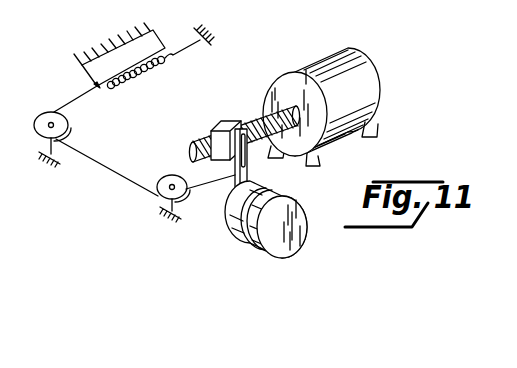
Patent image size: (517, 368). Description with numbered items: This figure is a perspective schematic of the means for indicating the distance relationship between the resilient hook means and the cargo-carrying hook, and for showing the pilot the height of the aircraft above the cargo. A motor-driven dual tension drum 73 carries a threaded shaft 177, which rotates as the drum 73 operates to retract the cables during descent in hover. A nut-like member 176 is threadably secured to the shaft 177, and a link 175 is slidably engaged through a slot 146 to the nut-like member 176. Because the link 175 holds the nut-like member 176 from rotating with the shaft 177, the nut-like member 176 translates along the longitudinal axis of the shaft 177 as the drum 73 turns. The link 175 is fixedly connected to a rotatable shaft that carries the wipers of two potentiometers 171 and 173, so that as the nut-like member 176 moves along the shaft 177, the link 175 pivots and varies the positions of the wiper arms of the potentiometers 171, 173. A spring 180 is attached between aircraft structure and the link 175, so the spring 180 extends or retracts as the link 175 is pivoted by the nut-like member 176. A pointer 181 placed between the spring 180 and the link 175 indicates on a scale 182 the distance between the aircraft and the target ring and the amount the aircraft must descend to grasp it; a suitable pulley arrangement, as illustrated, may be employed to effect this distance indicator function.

The motor-driven dual tension drum 73 is at (313, 62).
The slot 146 is at (253, 138).
The potentiometer 171 is at (236, 244).
The potentiometer 173 is at (283, 188).
The link 175 is at (236, 186).
The nut-like member 176 is at (224, 124).
The shaft 177 is at (256, 126).
The spring 180 is at (168, 48).
The pointer 181 is at (88, 81).
The scale 182 is at (102, 37).